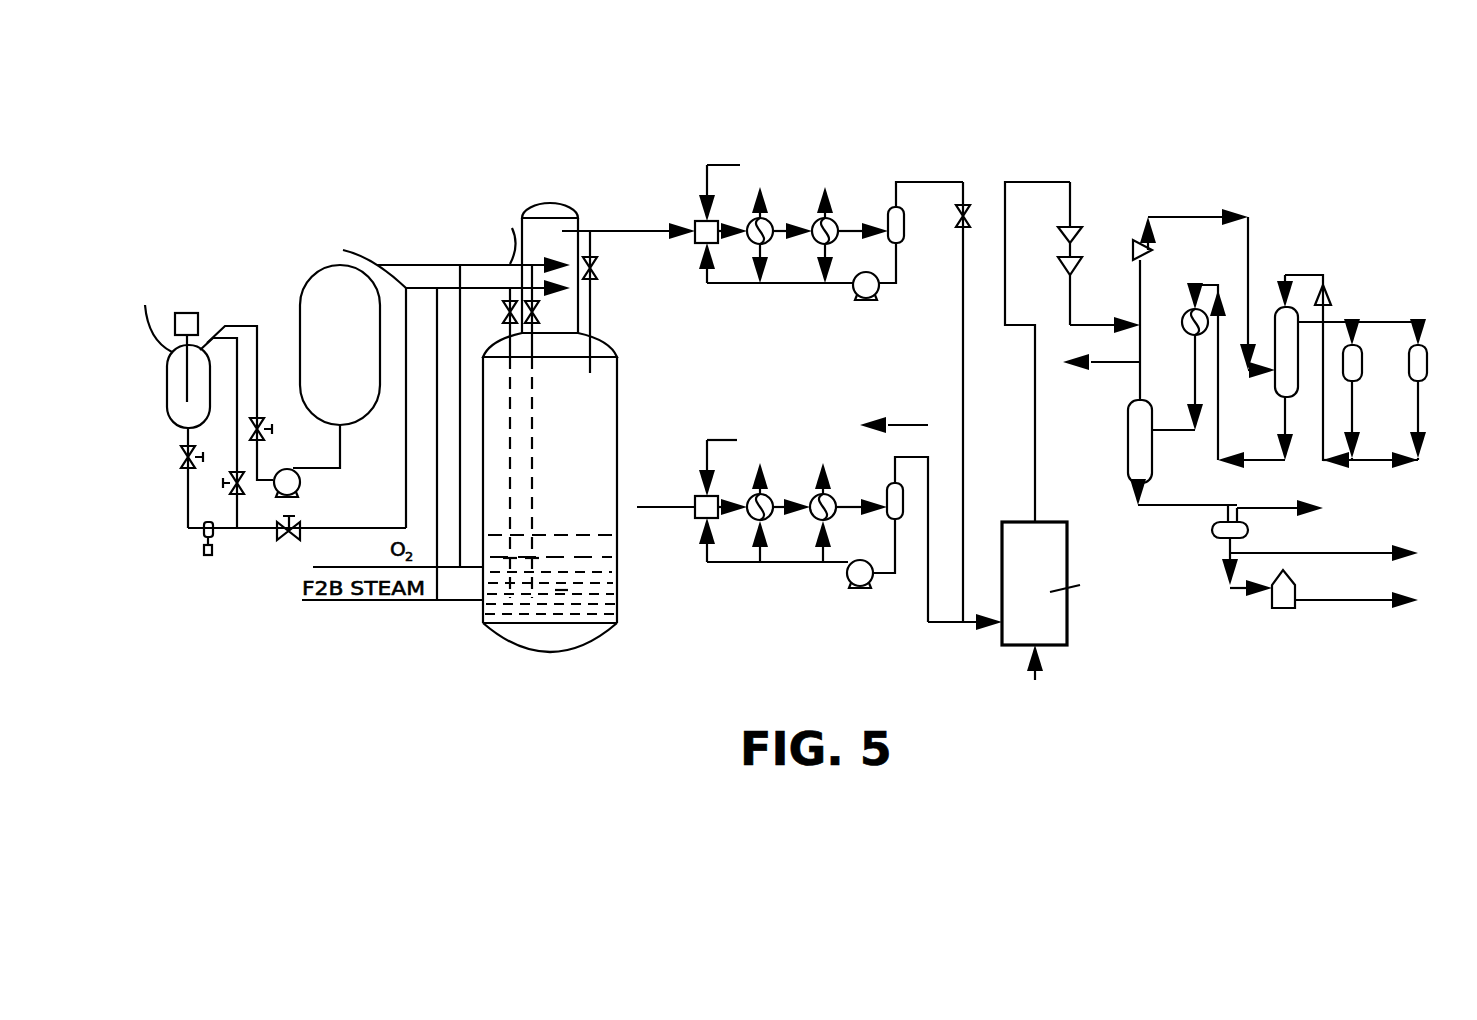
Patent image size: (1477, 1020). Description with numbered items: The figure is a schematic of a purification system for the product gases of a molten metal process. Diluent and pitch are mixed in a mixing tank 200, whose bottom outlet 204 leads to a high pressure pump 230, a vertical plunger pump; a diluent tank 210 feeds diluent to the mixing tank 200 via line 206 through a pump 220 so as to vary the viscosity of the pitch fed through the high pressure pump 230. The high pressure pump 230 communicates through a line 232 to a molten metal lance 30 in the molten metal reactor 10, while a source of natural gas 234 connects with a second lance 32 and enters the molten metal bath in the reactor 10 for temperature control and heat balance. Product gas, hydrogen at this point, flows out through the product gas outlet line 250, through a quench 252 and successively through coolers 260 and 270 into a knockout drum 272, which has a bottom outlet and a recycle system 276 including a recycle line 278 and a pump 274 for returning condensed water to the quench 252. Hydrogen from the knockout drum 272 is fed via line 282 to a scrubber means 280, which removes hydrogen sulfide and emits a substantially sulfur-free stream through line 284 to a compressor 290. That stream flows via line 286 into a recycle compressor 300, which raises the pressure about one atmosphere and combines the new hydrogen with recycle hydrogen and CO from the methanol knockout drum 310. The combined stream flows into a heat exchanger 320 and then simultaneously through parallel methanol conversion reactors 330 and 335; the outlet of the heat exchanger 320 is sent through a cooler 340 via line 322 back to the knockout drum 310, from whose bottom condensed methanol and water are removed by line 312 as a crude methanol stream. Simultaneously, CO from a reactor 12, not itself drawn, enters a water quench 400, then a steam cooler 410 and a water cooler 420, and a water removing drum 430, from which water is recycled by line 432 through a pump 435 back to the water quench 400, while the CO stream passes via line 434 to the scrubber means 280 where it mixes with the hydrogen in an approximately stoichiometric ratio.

The mixing tank 200 is at (167, 388).
The bottom outlet 204 is at (182, 428).
The high pressure pump 230 is at (200, 551).
The pump 220 is at (296, 468).
The line 206 is at (327, 468).
The diluent tank 210 is at (353, 373).
The line 232 is at (395, 528).
The source of natural gas 234 is at (471, 255).
The molten metal reactor 10 is at (577, 467).
The molten metal lance 30 is at (512, 402).
The second lance 32 is at (540, 428).
The product gas outlet line 250 is at (628, 288).
The quench 252 is at (698, 221).
The recycle line 278 is at (776, 264).
The cooler 260 is at (768, 218).
The cooler 270 is at (833, 218).
The knockout drum 272 is at (904, 208).
The pump 274 is at (852, 252).
The recycle system 276 is at (898, 269).
The line 282 is at (964, 416).
The reactor 12 is at (658, 532).
The water quench 400 is at (716, 516).
The line 432 is at (773, 540).
The steam cooler 410 is at (767, 496).
The water cooler 420 is at (832, 496).
The water removing drum 430 is at (890, 483).
The pump 435 is at (853, 560).
The line 434 is at (935, 630).
The scrubber means 280 is at (1053, 574).
The line 284 is at (1037, 423).
The compressor 290 is at (1058, 237).
The line 286 is at (1072, 298).
The recycle compressor 300 is at (1140, 238).
The methanol knockout drum 310 is at (1127, 458).
The line 312 is at (1274, 543).
The cooler 340 is at (1180, 313).
The heat exchanger 320 is at (1275, 380).
The line 322 is at (1282, 428).
The methanol conversion reactor 330 is at (1362, 365).
The methanol conversion reactor 335 is at (1433, 360).